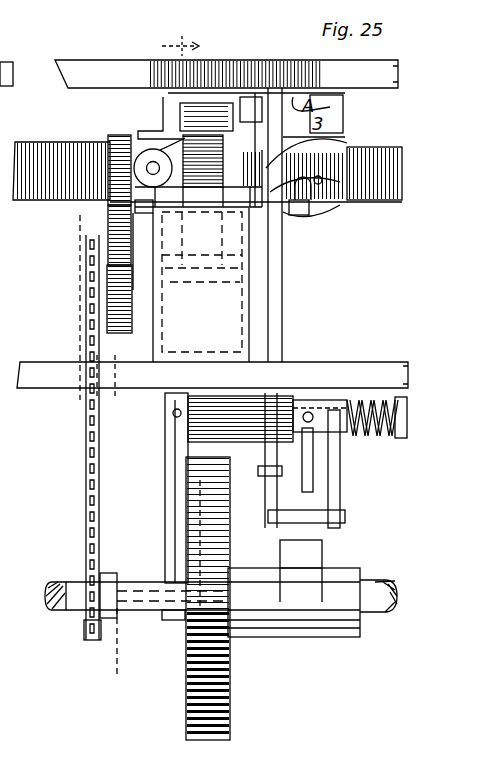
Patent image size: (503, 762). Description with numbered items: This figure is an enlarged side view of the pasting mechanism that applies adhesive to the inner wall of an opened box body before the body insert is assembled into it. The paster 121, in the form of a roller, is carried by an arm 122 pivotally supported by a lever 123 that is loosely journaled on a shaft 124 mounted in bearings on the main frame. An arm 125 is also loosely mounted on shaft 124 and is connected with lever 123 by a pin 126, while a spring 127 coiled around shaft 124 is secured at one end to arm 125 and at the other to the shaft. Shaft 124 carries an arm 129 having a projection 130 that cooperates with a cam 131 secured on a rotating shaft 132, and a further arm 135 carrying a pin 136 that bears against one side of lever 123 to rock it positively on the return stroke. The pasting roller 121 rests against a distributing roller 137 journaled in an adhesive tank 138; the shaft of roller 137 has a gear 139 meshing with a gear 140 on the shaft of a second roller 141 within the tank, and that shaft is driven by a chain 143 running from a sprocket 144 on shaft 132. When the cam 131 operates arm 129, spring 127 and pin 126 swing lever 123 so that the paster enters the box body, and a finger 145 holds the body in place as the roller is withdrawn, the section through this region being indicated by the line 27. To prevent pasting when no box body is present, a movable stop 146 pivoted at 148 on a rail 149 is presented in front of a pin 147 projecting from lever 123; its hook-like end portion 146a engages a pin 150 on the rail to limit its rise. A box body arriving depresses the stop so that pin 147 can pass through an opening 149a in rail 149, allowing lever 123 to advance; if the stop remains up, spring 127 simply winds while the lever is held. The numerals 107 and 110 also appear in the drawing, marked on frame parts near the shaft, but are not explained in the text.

The section line 27 is at (149, 360).
The paster 121 is at (192, 105).
The finger 145 is at (236, 60).
The arm 122 is at (256, 92).
The lever 123 is at (270, 318).
The rail 149 is at (38, 158).
The pivot 148 is at (135, 143).
The gear 139 is at (112, 200).
The gear 140 is at (115, 322).
The frame member 107 is at (88, 281).
The chain 143 is at (84, 535).
The sprocket 144 is at (80, 628).
The distributing roller 137 is at (213, 192).
The tank 138 is at (202, 282).
The opening 149a is at (322, 178).
The pin 150 is at (306, 195).
The movable stop 146 is at (326, 204).
The pin 147 is at (300, 222).
The hook-like end portion 146a is at (318, 222).
The roller 141 is at (252, 283).
The shaft 124 is at (358, 340).
The arm 129 is at (172, 512).
The arm 125 is at (340, 495).
The spring 127 is at (350, 438).
The arm 135 is at (314, 458).
The pin 126 is at (306, 523).
The pin 136 is at (255, 487).
The cam 131 is at (230, 676).
The shaft 110 is at (108, 578).
The projection 130 is at (312, 588).
The shaft 132 is at (168, 618).